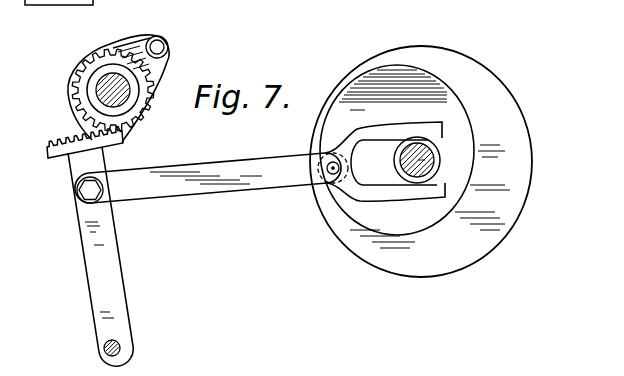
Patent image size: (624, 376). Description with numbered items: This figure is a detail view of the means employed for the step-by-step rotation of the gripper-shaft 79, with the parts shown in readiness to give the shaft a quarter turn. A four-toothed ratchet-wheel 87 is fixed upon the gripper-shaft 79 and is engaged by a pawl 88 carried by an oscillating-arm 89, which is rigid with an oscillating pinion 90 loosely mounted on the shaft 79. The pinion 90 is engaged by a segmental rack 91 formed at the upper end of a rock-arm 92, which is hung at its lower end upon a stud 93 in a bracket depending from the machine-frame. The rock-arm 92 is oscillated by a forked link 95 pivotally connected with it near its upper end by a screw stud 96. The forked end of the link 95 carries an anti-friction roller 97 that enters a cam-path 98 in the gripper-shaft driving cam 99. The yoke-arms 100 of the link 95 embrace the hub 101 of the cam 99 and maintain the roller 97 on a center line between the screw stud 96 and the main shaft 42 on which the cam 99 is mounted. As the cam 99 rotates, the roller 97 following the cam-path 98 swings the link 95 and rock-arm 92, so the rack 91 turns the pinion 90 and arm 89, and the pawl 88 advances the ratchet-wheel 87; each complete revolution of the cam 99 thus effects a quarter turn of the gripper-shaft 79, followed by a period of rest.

The main shaft 42 is at (437, 157).
The gripper-shaft 79 is at (97, 88).
The four-toothed ratchet-wheel 87 is at (95, 50).
The pawl 88 is at (133, 42).
The oscillating-arm 89 is at (167, 57).
The oscillating pinion 90 is at (74, 103).
The segmental rack 91 is at (45, 150).
The rock-arm 92 is at (88, 227).
The stud 93 is at (121, 339).
The forked link 95 is at (195, 187).
The screw stud 96 is at (78, 192).
The anti-friction roller 97 is at (323, 183).
The cam-path 98 is at (330, 138).
The gripper-shaft driving cam 99 is at (461, 67).
The yoke-arms 100 is at (394, 164).
The hub 101 is at (443, 163).